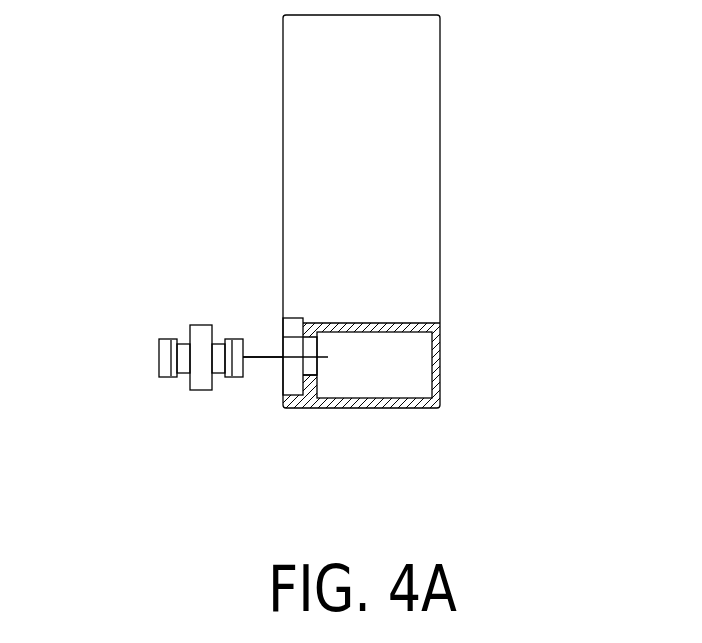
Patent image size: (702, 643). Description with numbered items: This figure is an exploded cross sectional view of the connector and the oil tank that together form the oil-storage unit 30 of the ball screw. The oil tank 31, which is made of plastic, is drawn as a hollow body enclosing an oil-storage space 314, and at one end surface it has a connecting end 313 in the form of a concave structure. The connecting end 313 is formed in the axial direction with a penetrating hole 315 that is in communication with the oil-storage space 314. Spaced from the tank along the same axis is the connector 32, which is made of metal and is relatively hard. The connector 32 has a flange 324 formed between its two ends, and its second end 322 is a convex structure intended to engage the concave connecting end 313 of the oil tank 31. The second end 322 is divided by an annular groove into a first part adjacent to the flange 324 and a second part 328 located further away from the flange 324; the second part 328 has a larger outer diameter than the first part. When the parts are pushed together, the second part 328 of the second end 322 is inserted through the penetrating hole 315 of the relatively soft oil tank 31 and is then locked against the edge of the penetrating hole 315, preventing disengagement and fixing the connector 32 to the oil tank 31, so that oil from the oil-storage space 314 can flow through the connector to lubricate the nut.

The oil-storage unit 30 is at (164, 191).
The oil tank 31 is at (456, 160).
The connecting end 313 is at (291, 377).
The oil-storage space 314 is at (398, 365).
The penetrating hole 315 is at (312, 365).
The connector 32 is at (189, 405).
The second end 322 is at (238, 338).
The flange 324 is at (202, 332).
The second part 328 is at (239, 378).